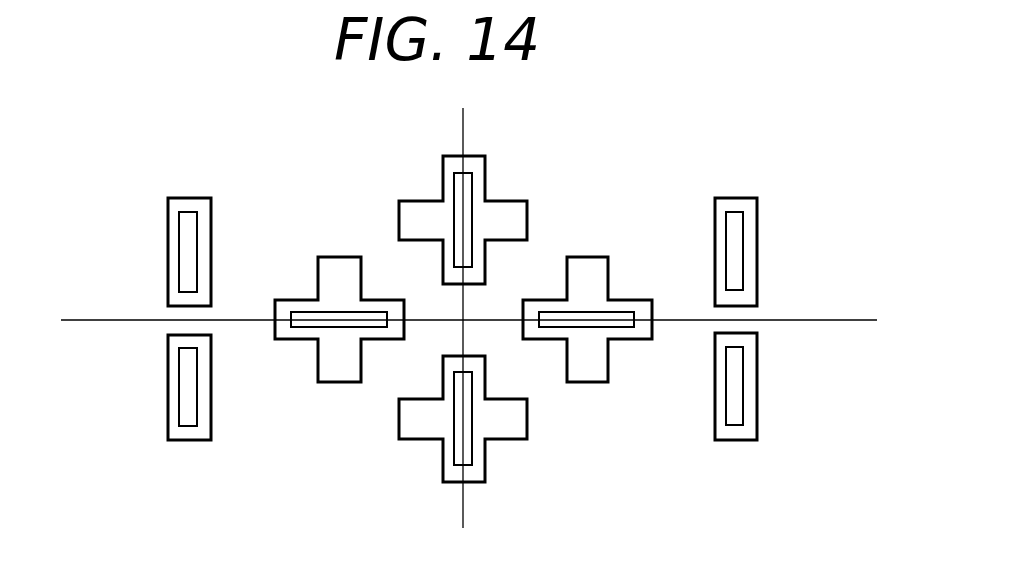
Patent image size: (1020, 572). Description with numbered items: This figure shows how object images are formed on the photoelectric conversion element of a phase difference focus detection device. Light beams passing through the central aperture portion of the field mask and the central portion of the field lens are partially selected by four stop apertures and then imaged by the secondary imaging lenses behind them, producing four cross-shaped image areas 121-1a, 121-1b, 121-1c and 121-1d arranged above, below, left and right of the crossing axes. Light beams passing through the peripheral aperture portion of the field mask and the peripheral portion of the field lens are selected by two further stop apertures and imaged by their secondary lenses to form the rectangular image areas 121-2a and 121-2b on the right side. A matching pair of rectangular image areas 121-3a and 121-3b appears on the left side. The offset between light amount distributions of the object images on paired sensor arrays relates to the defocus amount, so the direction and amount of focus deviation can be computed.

The image area 121-1a is at (486, 163).
The image area 121-1b is at (486, 465).
The image area 121-1c is at (588, 383).
The image area 121-1d is at (338, 383).
The image area 121-2a is at (758, 200).
The image area 121-2b is at (758, 391).
The rectangular mark (left upper) 121-3a is at (168, 210).
The rectangular mark (left lower) 121-3b is at (168, 366).